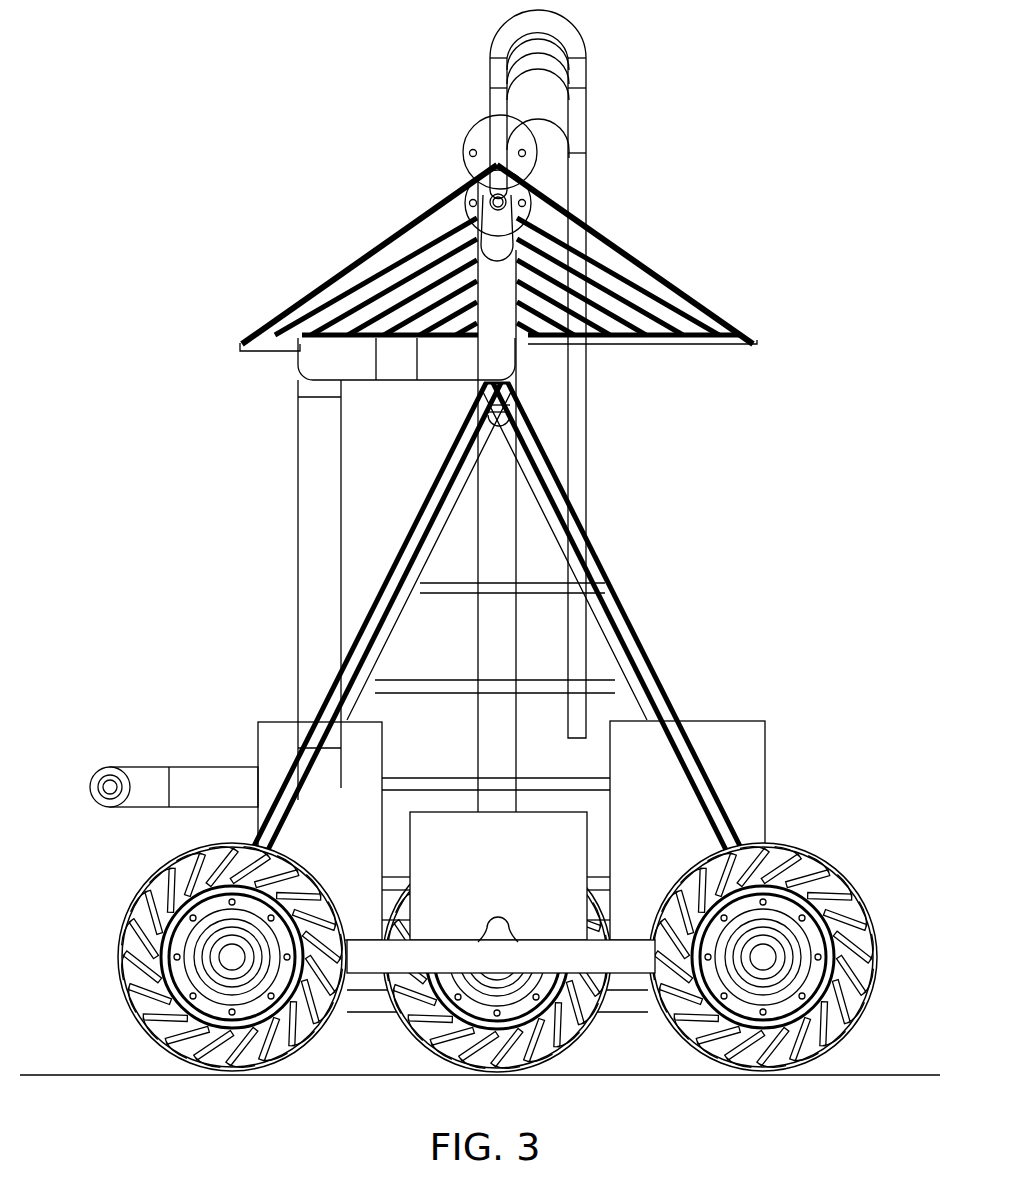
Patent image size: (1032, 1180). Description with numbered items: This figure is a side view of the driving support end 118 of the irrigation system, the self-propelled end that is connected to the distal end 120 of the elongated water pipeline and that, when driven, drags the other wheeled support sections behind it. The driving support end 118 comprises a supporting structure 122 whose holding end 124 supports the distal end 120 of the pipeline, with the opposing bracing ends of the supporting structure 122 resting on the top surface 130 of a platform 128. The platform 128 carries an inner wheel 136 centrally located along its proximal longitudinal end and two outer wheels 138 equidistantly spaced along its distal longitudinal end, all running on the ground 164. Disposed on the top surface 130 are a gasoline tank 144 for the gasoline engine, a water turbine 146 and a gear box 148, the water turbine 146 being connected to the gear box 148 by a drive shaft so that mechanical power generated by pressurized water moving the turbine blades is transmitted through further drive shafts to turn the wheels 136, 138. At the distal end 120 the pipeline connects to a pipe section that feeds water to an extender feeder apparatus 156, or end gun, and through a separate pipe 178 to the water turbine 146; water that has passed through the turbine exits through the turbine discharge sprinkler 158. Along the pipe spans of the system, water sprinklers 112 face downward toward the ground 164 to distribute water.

The water sprinklers 112 is at (585, 490).
The driving support end 118 is at (712, 618).
The distal end 120 is at (521, 157).
The supporting structure 122 is at (622, 637).
The holding end 124 is at (530, 392).
The platform 128 is at (515, 894).
The top surface 130 is at (352, 938).
The inner wheel 136 is at (543, 1048).
The outer wheels 138 is at (845, 1010).
The gasoline tank 144 is at (757, 780).
The water turbine 146 is at (372, 866).
The gear box 148 is at (535, 889).
The extender feeder apparatus 156 is at (476, 184).
The turbine discharge sprinkler 158 is at (108, 786).
The ground 164 is at (100, 1075).
The pipe 178 is at (318, 352).